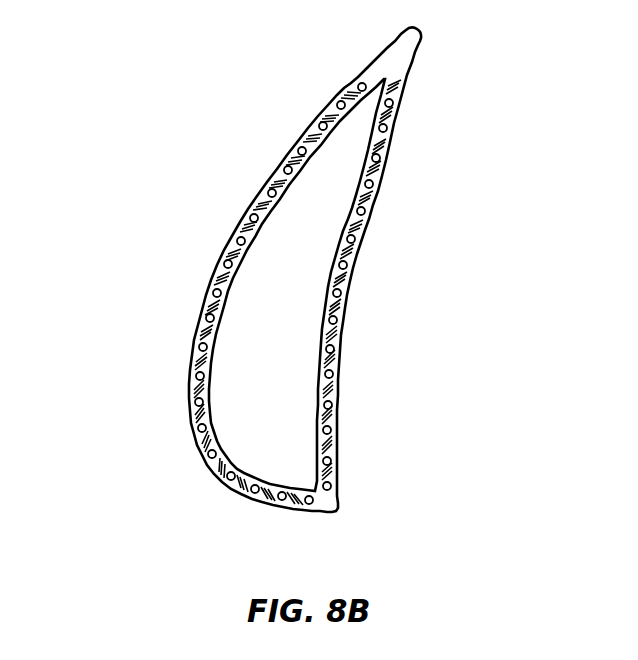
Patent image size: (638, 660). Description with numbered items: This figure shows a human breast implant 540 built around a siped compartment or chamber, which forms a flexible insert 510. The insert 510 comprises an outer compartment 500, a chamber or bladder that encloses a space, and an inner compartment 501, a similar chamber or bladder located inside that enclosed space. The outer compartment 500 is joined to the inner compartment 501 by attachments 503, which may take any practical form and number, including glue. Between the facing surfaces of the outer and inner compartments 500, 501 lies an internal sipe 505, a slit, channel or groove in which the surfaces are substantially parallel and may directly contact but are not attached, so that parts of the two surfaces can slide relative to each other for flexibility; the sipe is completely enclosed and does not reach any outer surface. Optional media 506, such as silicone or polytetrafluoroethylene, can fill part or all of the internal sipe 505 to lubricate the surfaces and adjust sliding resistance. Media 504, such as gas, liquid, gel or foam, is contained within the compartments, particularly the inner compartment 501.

The outer compartment 500 is at (190, 353).
The inner compartment 501 is at (190, 378).
The attachment 503 is at (410, 67).
The media 504 is at (268, 433).
The internal sipe 505 is at (205, 466).
The media of internal sipe 506 is at (267, 183).
The flexible insert 510 is at (315, 331).
The human breast implant 540 is at (413, 331).